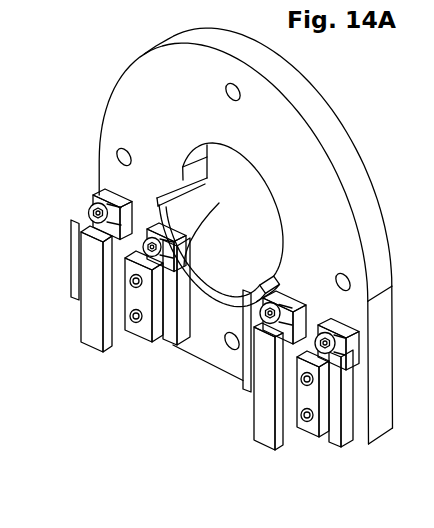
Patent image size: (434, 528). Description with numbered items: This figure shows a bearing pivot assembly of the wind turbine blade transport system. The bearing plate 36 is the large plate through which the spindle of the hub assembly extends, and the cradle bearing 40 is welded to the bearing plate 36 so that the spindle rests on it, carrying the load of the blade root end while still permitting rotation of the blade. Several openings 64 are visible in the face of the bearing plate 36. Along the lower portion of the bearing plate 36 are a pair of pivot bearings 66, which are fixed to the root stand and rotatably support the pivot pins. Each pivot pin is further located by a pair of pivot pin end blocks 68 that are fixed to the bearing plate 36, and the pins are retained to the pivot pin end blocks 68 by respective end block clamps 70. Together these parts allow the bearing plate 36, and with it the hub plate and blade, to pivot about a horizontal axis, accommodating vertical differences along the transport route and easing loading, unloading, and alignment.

The bearing plate 36 is at (128, 53).
The cradle bearing 40 is at (219, 204).
The mounting holes 64 is at (227, 94).
The pivot bearings 66 is at (88, 350).
The pivot pin end blocks 68 is at (70, 234).
The end block clamps 70 is at (88, 208).